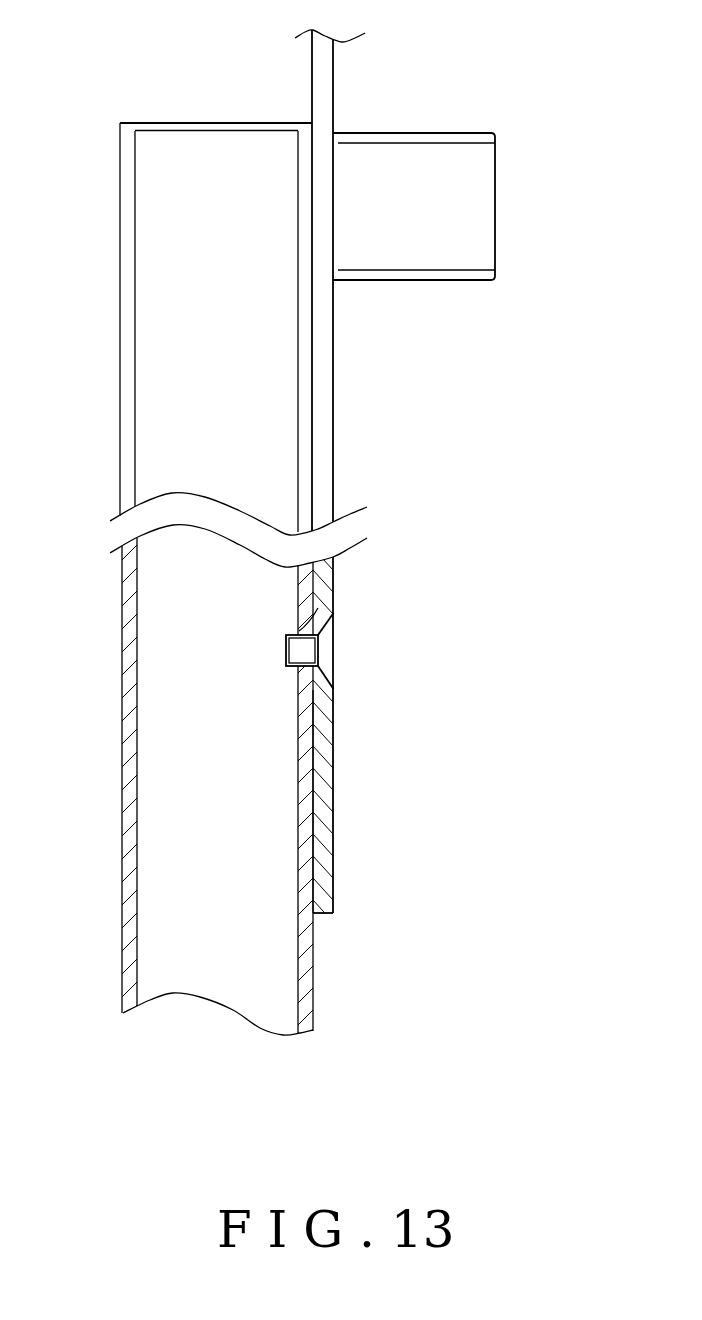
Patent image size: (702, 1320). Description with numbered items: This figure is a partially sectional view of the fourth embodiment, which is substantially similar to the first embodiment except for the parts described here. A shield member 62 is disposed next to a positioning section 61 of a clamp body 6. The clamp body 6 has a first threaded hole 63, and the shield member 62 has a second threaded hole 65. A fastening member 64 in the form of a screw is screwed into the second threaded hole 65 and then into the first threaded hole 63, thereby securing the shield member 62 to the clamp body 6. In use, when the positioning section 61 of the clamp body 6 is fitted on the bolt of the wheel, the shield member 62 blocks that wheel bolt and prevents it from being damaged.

The clamp body 6 is at (285, 438).
The positioning section 61 is at (417, 163).
The shield member 62 is at (323, 360).
The first threaded hole 63 is at (305, 635).
The fastening member 64 is at (328, 663).
The second threaded hole 65 is at (318, 668).